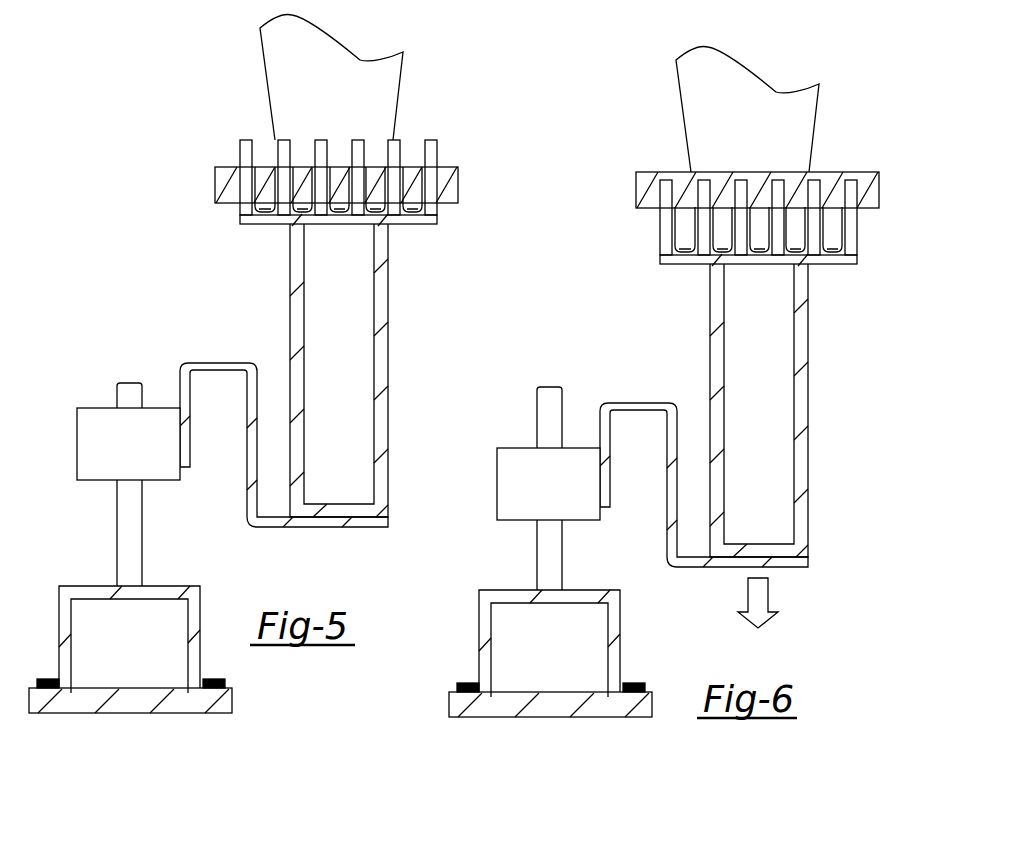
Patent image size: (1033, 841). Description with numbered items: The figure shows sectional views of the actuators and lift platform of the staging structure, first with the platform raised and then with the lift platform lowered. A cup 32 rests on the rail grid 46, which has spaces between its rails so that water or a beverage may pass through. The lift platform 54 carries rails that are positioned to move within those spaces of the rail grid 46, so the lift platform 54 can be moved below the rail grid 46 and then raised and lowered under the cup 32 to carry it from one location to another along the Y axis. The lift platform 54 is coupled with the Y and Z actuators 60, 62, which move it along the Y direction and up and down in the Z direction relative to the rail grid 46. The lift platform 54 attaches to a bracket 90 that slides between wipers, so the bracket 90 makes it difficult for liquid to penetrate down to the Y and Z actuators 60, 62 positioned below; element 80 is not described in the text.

In FIG. 5, the cup 32 is at (342, 98).
In FIG. 6, the cup 32 is at (752, 146).
In FIG. 5, the rail grid 46 is at (374, 140).
In FIG. 6, the rail grid 46 is at (757, 151).
In FIG. 5, the support bar 80 is at (448, 167).
In FIG. 6, the support bar 80 is at (870, 173).
In FIG. 5, the lift platform 54 is at (389, 293).
In FIG. 6, the lift platform 54 is at (807, 350).
In FIG. 5, the Y actuator 60 is at (143, 653).
In FIG. 6, the Y actuator 60 is at (563, 671).
In FIG. 5, the Z actuator 62 is at (143, 526).
In FIG. 6, the Z actuator 62 is at (565, 543).
In FIG. 5, the bracket 90 is at (215, 363).
In FIG. 6, the bracket 90 is at (640, 402).